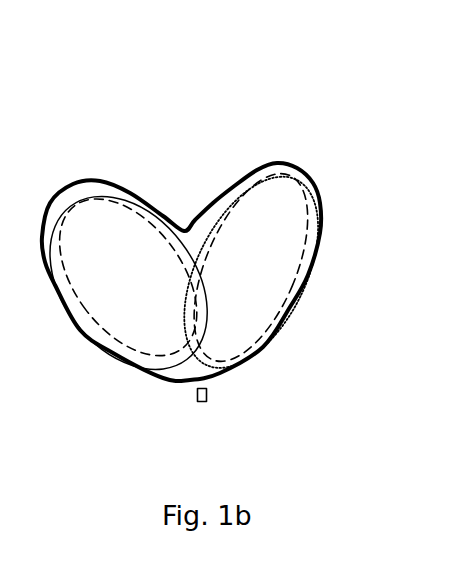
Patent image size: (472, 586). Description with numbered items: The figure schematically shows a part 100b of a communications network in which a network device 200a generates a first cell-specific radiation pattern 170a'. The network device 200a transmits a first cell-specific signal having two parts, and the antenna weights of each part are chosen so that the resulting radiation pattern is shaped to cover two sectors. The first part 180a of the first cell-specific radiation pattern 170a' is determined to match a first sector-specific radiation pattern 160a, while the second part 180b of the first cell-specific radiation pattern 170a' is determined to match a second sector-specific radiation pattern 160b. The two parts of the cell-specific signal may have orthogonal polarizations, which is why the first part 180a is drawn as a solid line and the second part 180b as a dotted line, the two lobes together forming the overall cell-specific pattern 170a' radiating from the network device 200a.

The part of a communications network 100b is at (284, 54).
The first sector-specific radiation pattern 160a is at (73, 203).
The first part of the first cell-specific radiation pattern 180a is at (127, 202).
The second sector-specific radiation pattern 160b is at (229, 206).
The second part of the first cell-specific radiation pattern 180b is at (310, 185).
The first cell-specific radiation pattern 170a' is at (215, 272).
The network device 200a is at (208, 390).